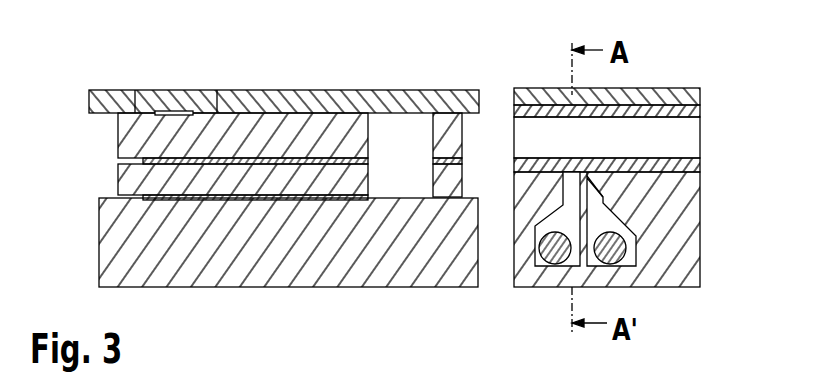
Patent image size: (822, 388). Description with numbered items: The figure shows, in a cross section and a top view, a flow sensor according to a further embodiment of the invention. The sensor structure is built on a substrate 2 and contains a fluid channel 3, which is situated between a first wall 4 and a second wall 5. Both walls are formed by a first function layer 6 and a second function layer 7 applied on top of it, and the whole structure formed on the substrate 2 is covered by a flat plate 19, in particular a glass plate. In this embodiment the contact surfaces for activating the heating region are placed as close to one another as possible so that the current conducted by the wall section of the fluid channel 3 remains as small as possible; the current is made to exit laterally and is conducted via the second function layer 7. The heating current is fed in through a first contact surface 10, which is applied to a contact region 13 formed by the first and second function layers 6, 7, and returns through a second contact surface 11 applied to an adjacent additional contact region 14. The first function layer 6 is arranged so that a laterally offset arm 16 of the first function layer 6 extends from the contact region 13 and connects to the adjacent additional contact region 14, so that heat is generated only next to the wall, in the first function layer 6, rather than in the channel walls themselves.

The substrate 2 is at (105, 247).
The fluid channel 3 is at (692, 137).
The first wall 4 is at (690, 165).
The second wall 5 is at (690, 110).
The first function layer 6 is at (128, 178).
The second function layer 7 is at (128, 133).
The first contact surface 10 is at (165, 111).
The second contact surface 11 is at (620, 250).
The contact region 13 is at (535, 267).
The additional contact region 14 is at (632, 268).
The laterally offset arm 16 is at (585, 182).
The flat plate 19 is at (323, 98).